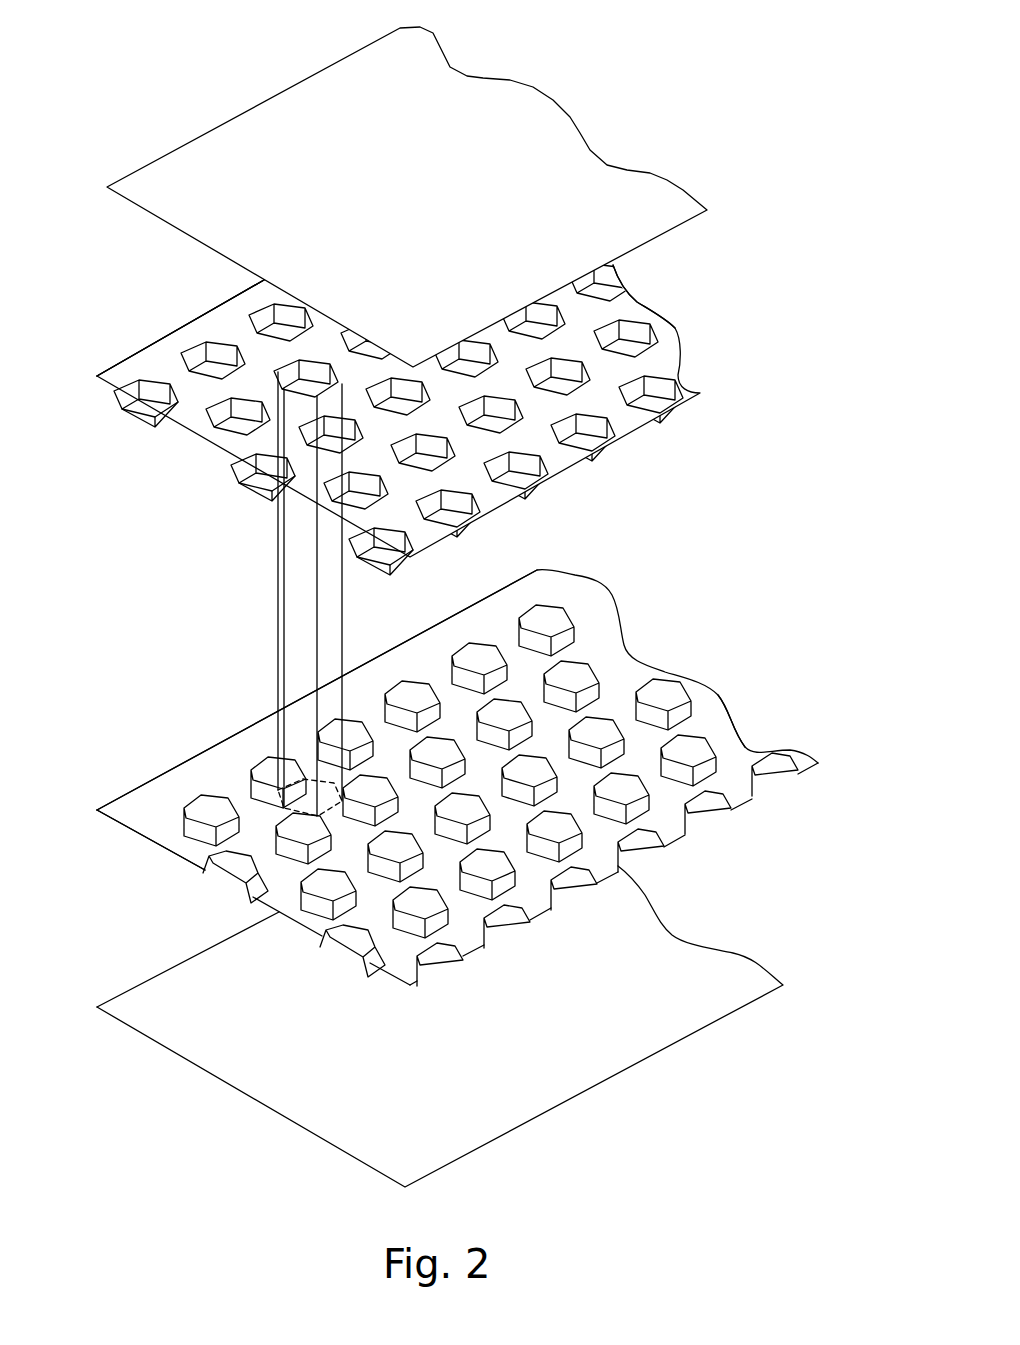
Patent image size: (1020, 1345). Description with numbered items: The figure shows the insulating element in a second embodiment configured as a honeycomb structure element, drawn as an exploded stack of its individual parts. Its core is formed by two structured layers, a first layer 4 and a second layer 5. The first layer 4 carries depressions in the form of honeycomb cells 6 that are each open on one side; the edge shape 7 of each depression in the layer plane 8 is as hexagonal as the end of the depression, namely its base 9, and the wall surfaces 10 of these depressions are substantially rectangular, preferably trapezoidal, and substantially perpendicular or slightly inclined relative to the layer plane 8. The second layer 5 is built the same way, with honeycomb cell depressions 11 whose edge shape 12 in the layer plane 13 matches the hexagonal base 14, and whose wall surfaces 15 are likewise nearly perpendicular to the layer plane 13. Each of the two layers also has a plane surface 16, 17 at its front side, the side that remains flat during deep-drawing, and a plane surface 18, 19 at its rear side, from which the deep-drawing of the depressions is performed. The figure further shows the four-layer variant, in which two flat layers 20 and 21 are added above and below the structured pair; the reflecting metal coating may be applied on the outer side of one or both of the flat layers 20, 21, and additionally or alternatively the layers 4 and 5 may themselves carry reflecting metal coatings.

The first layer 4 is at (416, 399).
The second layer 5 is at (438, 806).
The honeycomb cell depression 6 is at (148, 408).
The edge shape 7 is at (585, 447).
The layer plane 8 is at (163, 362).
The base 9 is at (667, 422).
The wall surfaces 10 is at (660, 390).
The honeycomb cell depression 11 is at (230, 877).
The edge shape 12 is at (542, 912).
The layer plane 13 is at (142, 808).
The base 14 is at (568, 678).
The wall surfaces 15 is at (635, 808).
The plane surface at front side 16 is at (680, 300).
The plane surface at front side 17 is at (281, 940).
The plane surface at rear side 18 is at (196, 458).
The plane surface at rear side 19 is at (720, 722).
The flat layer 20 is at (350, 117).
The flat layer 21 is at (575, 1053).